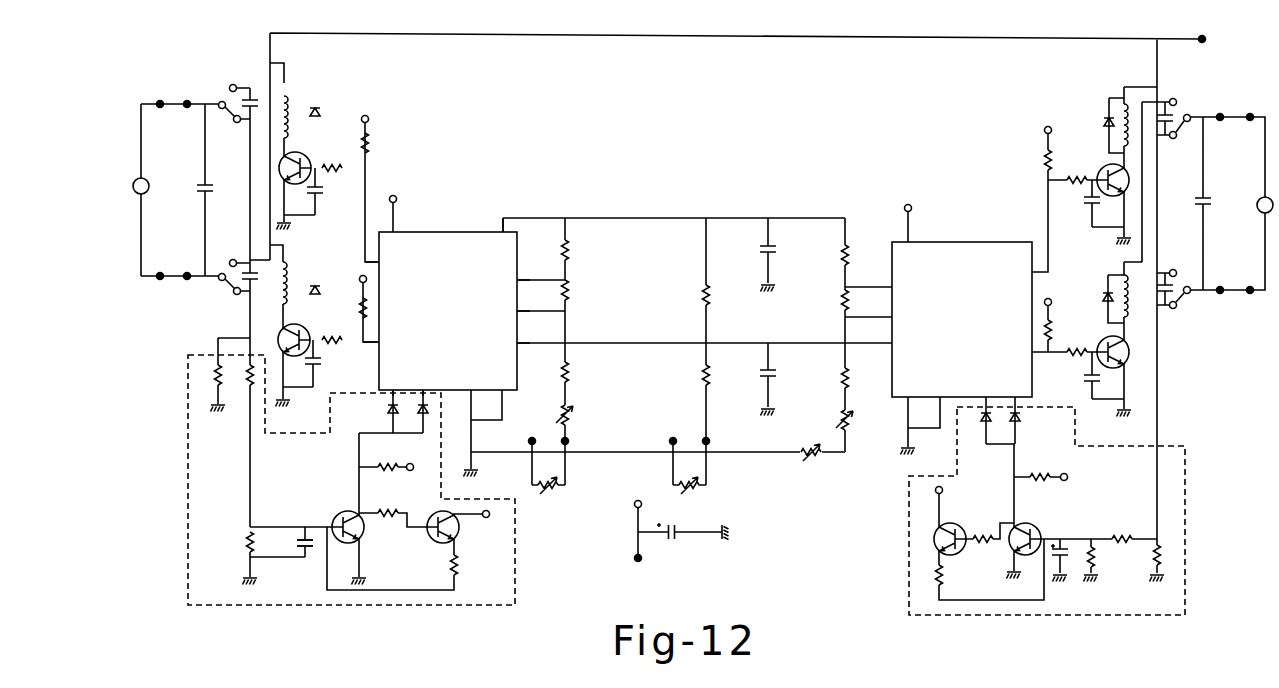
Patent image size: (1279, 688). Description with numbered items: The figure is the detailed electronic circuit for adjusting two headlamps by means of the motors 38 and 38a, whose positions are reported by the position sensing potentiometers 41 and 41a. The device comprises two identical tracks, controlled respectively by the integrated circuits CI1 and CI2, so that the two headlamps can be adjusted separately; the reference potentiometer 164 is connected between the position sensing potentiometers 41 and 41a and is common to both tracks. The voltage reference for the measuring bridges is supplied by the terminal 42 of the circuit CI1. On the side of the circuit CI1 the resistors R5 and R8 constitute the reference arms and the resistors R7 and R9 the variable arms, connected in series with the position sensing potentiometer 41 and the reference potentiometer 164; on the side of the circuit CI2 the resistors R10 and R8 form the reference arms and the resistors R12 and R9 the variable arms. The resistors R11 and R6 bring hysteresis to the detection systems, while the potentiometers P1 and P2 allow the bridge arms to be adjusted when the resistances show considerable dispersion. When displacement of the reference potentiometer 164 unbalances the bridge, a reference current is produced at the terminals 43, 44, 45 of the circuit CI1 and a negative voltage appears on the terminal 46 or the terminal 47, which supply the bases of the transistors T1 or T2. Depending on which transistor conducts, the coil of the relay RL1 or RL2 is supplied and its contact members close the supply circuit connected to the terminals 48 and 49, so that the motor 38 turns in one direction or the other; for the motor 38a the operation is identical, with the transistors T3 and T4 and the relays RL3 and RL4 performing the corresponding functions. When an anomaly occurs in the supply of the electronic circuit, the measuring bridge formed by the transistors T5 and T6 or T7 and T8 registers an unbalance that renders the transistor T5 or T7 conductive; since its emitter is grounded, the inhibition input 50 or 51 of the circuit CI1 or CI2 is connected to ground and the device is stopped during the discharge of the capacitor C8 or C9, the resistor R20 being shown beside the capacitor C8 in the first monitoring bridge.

The terminal 48 is at (199, 101).
The terminal 49 is at (199, 273).
The motor 38 is at (172, 182).
The motor 38a is at (1262, 211).
The relay RL1 is at (313, 103).
The relay RL2 is at (310, 271).
The relay RL3 is at (1103, 108).
The relay RL4 is at (1099, 284).
The transistor T1 is at (312, 159).
The transistor T2 is at (311, 338).
The transistor T3 is at (1103, 173).
The transistor T4 is at (1102, 346).
The transistor T5 is at (343, 517).
The transistor T6 is at (438, 517).
The transistor T7 is at (1030, 527).
The transistor T8 is at (955, 527).
The integrated circuit CI1 is at (448, 311).
The integrated circuit CI2 is at (962, 319).
The terminal 42 is at (503, 241).
The terminal 43 is at (509, 282).
The terminal 44 is at (509, 313).
The terminal 45 is at (509, 344).
The terminal 46 is at (387, 342).
The terminal 47 is at (388, 262).
The inhibition input 50 is at (398, 381).
The inhibition input 51 is at (431, 381).
The resistor R5 is at (585, 253).
The resistor R6 is at (585, 293).
The resistor R7 is at (585, 375).
The resistor R8 is at (725, 300).
The resistor R9 is at (725, 377).
The resistor R10 is at (827, 258).
The resistor R11 is at (827, 303).
The resistor R12 is at (827, 381).
The resistor R20 is at (230, 558).
The potentiometer P1 is at (580, 418).
The potentiometer P2 is at (829, 423).
The position sensing potentiometer 41 is at (554, 498).
The reference potentiometer 164 is at (695, 499).
The position sensing potentiometer 41a is at (823, 469).
The capacitor C8 is at (290, 547).
The capacitor C9 is at (1064, 552).